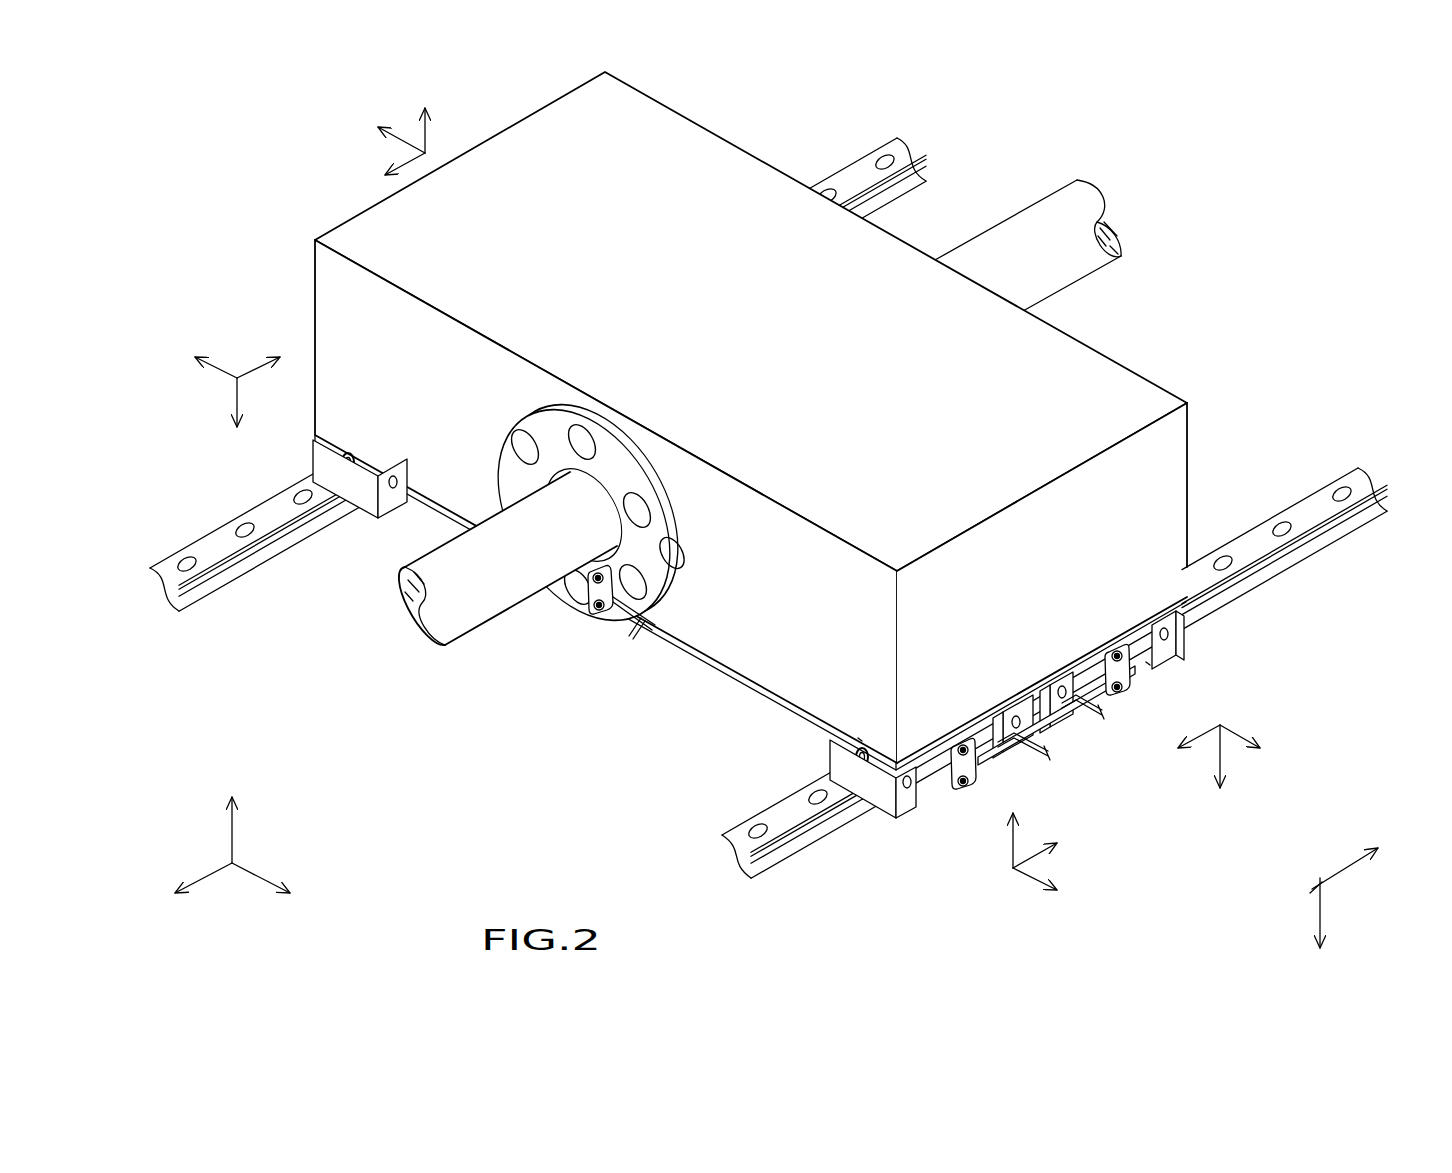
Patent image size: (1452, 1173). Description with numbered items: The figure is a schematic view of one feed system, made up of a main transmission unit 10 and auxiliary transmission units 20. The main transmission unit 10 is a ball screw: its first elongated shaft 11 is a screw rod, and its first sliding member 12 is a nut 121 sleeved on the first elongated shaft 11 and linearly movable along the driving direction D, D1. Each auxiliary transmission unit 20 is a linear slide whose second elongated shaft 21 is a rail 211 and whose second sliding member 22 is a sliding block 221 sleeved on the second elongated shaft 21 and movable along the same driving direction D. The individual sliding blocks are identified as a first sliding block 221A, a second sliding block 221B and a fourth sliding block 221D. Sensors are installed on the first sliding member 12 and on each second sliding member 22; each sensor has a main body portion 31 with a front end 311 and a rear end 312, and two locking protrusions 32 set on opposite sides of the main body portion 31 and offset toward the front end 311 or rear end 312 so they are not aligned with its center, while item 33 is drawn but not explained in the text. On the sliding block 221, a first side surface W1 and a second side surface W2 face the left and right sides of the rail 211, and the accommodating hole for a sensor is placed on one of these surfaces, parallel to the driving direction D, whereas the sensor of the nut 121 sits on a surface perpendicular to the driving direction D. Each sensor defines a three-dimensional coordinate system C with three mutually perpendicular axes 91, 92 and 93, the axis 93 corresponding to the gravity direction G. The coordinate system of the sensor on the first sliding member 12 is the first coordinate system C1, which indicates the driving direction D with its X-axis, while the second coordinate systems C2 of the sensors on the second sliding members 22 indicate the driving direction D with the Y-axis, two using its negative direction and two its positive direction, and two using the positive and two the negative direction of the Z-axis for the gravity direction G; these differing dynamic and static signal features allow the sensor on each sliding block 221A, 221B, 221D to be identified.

The main transmission unit 10 is at (527, 609).
The first elongated shaft 11 is at (484, 606).
The first sliding member 12 is at (598, 631).
The nut 121 is at (604, 406).
The auxiliary transmission unit 20 is at (1016, 710).
The second elongated shaft 21 is at (1016, 682).
The rail 211 is at (742, 831).
The second sliding member 22 is at (922, 795).
The sliding block 221 is at (783, 779).
The first sliding block 221A is at (840, 757).
The second sliding block 221B is at (1190, 648).
The fourth sliding block 221D is at (373, 527).
The main body portion 31 is at (1019, 793).
The front end 311 is at (981, 754).
The rear end 312 is at (949, 768).
The locking protrusion 32 is at (1016, 793).
The hook 33 is at (1004, 740).
The axis 91 is at (411, 143).
The axis 92 is at (421, 167).
The axis 93 is at (432, 140).
The three-dimensional coordinate system C is at (231, 824).
The first coordinate system C1 is at (266, 820).
The second coordinate system C2 is at (343, 154).
The first side surface W1 is at (1148, 665).
The second side surface W2 is at (860, 741).
The driving direction D is at (1381, 861).
The first direction D1 is at (1395, 848).
The gravity direction G is at (1320, 935).